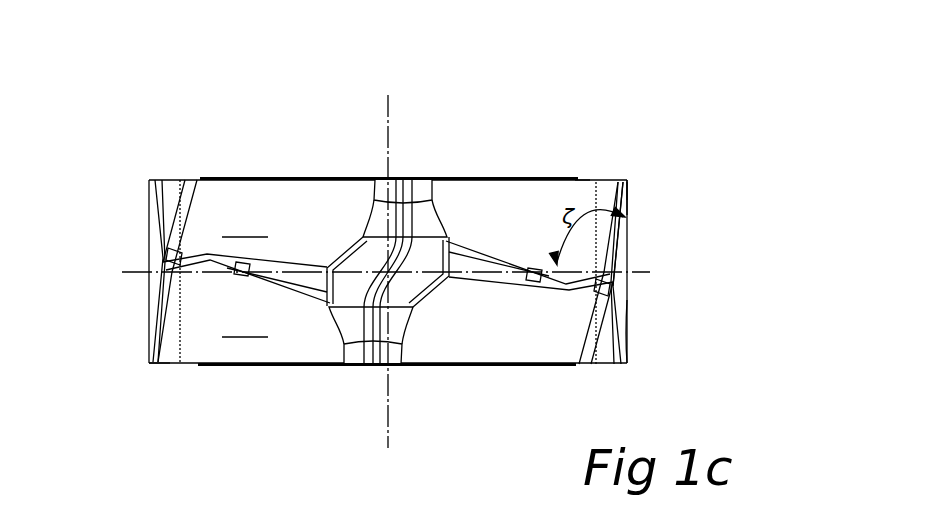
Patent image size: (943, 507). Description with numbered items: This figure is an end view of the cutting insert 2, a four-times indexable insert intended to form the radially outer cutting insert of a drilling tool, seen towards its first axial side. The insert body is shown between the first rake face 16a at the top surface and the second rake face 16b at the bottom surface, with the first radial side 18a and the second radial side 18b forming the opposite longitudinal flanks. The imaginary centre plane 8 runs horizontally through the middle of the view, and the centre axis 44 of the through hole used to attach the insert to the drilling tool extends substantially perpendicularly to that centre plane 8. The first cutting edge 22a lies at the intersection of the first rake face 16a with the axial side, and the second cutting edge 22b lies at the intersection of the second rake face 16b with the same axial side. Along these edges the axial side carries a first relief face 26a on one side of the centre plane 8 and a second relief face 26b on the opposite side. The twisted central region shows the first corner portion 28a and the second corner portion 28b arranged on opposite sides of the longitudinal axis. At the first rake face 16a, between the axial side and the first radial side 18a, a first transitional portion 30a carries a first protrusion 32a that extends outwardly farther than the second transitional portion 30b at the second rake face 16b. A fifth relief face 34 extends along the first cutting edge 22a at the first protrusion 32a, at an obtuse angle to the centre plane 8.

The cutting insert 2 is at (576, 70).
The imaginary centre plane 8 is at (123, 271).
The first rake face 16a is at (446, 123).
The second rake face 16b is at (444, 405).
The first radial side 18a is at (658, 288).
The second radial side 18b is at (112, 233).
The first cutting edge 22a is at (586, 168).
The second cutting edge 22b is at (166, 378).
The first relief face 26a is at (245, 224).
The second relief face 26b is at (245, 324).
The first corner portion 28a is at (403, 180).
The second corner portion 28b is at (373, 365).
The first transitional portion 30a is at (658, 189).
The second transitional portion 30b is at (643, 370).
The first protrusion 32a is at (627, 180).
The fifth relief face 34 is at (645, 231).
The centre axis 44 is at (388, 130).